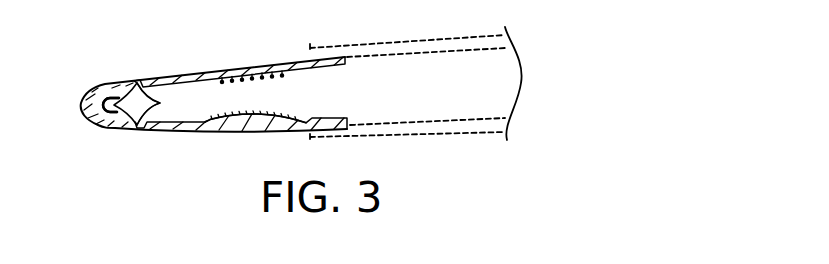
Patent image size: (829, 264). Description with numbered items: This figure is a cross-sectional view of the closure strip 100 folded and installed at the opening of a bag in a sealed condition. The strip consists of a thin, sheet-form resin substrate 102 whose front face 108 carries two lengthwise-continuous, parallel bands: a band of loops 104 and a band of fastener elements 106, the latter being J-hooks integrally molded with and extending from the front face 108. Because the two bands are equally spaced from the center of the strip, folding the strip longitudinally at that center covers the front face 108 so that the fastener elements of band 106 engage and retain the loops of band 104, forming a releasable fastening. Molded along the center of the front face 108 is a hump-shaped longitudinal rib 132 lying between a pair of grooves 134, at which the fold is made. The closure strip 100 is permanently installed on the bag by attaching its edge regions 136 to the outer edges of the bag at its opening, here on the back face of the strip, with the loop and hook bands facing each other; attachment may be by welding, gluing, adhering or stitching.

The closure strip 100 is at (301, 86).
The substrate 102 is at (350, 118).
The band of loops 104 is at (260, 114).
The band of fastener elements 106 is at (252, 73).
The front face 108 is at (338, 64).
The longitudinal rib 132 is at (110, 116).
The grooves 134 is at (143, 127).
The edge regions 136 is at (320, 44).